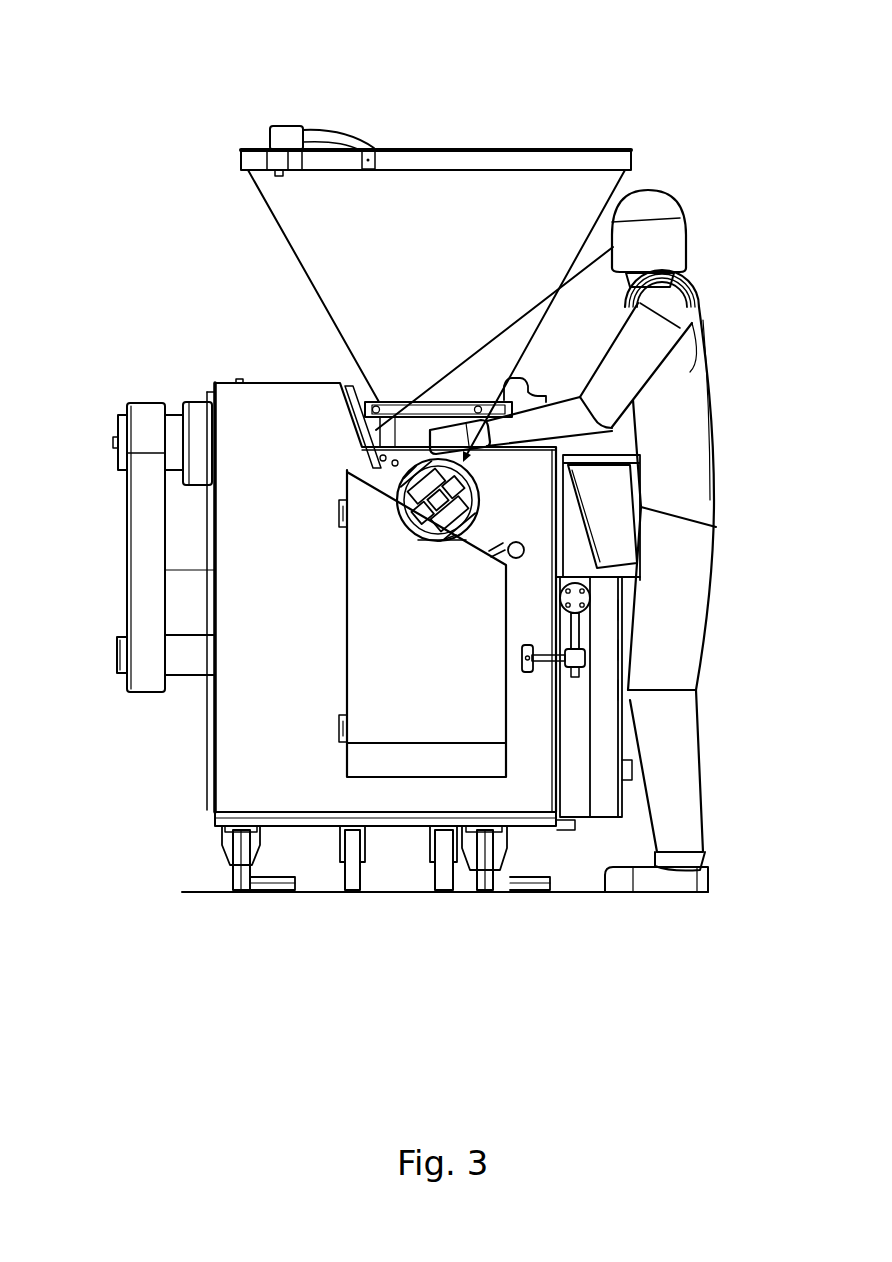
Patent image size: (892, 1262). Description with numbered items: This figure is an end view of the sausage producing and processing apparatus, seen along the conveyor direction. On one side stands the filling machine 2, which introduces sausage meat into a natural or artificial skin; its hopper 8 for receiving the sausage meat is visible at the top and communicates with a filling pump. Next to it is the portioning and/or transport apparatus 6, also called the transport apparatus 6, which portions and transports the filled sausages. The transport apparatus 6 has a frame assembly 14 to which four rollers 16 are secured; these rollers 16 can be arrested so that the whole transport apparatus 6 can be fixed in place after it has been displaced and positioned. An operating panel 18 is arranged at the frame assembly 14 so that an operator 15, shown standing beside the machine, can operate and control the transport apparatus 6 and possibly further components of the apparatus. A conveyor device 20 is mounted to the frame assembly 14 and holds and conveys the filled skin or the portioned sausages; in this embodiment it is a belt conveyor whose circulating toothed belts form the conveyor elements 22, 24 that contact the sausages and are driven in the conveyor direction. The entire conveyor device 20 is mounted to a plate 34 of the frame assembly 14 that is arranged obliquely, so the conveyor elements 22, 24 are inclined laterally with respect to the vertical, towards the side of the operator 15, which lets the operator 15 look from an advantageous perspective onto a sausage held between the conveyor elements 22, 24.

The filling machine 2 is at (538, 102).
The portioning and/or transport apparatus 6 is at (183, 761).
The hopper 8 is at (464, 148).
The frame assembly 14 is at (197, 716).
The operator 15 is at (573, 530).
The rollers 16 is at (229, 883).
The operating panel 18 is at (372, 428).
The conveyor device 20 is at (508, 514).
The conveyor element 22 is at (428, 482).
The conveyor element 24 is at (445, 538).
The plate 34 is at (456, 550).